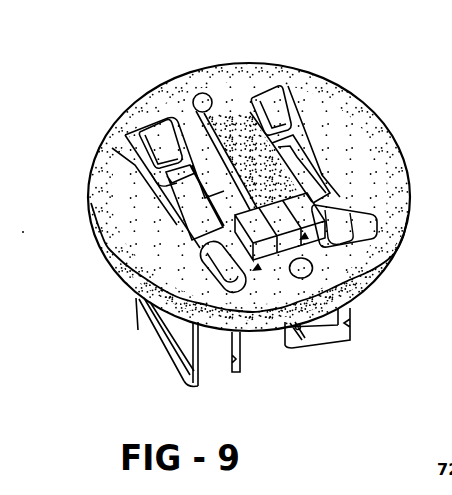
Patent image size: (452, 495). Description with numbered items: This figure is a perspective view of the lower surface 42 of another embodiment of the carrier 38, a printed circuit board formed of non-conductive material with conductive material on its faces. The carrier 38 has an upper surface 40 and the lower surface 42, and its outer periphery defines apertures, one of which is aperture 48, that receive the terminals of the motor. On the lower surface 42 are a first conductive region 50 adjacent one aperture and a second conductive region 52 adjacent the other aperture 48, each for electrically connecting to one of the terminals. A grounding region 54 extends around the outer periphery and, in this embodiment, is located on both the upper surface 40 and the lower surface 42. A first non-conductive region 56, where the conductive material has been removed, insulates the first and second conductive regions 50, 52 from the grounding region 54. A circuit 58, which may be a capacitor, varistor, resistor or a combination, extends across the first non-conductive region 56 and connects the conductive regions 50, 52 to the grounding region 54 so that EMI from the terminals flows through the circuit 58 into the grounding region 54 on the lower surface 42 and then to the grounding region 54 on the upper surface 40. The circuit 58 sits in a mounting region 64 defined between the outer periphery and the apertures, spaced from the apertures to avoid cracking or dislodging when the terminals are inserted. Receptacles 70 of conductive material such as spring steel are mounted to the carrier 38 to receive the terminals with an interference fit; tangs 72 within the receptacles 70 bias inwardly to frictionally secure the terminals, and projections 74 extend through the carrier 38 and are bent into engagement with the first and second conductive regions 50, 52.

The carrier 38 is at (90, 245).
The upper surface 40 is at (386, 267).
The lower surface 42 is at (311, 72).
The aperture 48 is at (117, 122).
The first conductive region 50 is at (125, 135).
The second conductive region 52 is at (334, 172).
The grounding region 54 is at (200, 254).
The first non-conductive region 56 is at (177, 99).
The circuit 58 is at (312, 270).
The mounting region 64 is at (262, 298).
The receptacles 70 is at (315, 348).
The tangs 72 is at (175, 329).
The projections 74 is at (150, 137).